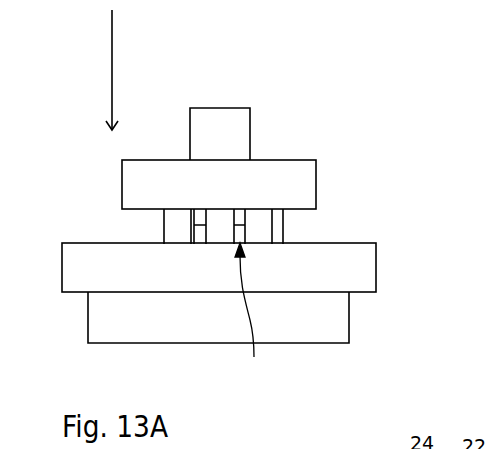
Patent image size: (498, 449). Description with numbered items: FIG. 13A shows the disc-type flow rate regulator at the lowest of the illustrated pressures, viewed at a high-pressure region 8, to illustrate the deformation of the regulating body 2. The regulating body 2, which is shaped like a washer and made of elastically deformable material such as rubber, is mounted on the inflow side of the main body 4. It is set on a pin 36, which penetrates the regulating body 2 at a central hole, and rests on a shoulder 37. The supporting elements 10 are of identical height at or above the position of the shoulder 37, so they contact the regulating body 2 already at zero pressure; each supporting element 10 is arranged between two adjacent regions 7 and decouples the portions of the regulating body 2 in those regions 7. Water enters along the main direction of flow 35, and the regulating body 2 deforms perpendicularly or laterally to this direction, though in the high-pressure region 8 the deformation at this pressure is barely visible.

The regulating body 2 is at (216, 131).
The main body 4 is at (115, 264).
The regions 7 is at (254, 314).
The high-pressure regions 8 is at (254, 314).
The supporting element 10 is at (253, 179).
The main direction of flow 35 is at (112, 45).
The pin 36 is at (241, 222).
The shoulder 37 is at (236, 137).